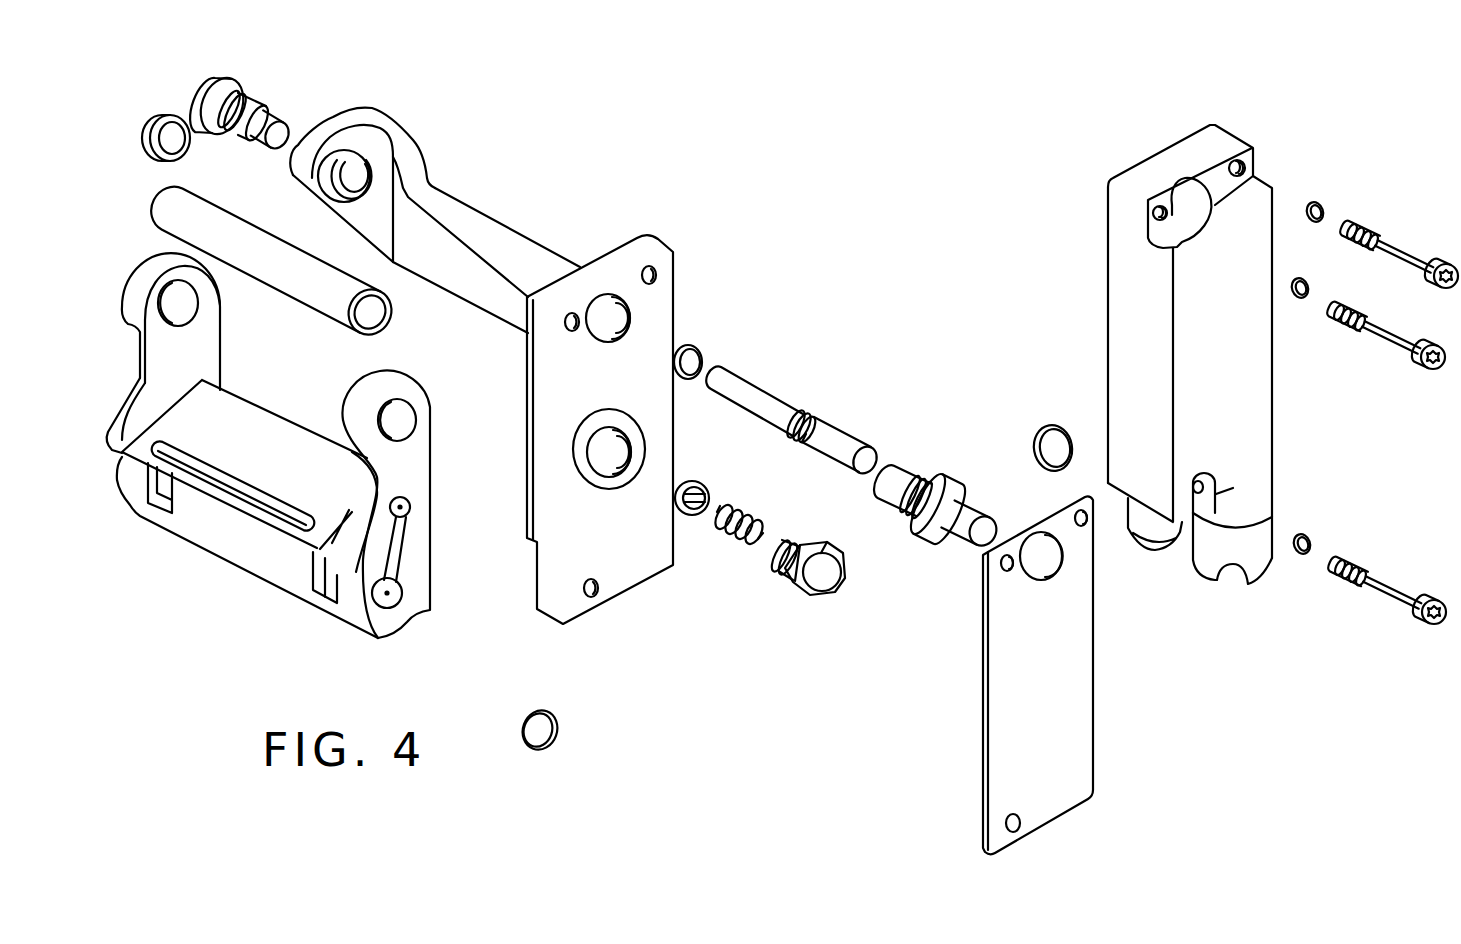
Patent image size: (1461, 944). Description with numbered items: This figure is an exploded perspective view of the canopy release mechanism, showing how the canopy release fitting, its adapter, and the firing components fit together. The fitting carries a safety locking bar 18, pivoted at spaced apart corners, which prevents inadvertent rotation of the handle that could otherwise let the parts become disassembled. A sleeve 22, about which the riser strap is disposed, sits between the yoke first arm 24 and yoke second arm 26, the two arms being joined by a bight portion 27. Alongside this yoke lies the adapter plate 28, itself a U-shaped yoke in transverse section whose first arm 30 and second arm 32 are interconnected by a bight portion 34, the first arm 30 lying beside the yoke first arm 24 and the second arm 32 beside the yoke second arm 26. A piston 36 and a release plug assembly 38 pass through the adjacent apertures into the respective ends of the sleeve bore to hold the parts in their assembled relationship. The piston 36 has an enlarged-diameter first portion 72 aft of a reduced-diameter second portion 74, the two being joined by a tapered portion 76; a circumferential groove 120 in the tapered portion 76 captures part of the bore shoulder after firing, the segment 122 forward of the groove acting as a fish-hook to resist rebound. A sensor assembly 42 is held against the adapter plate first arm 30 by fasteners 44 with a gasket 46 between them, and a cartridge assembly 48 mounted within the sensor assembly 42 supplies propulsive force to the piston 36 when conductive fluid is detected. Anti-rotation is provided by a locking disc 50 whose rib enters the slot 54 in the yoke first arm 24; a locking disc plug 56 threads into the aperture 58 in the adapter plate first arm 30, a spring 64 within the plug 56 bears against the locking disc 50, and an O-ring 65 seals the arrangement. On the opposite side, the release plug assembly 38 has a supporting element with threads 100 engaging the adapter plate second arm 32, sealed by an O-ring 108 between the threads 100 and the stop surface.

The safety locking bar 18 is at (285, 433).
The sleeve 22 is at (260, 238).
The yoke first arm 24 is at (418, 497).
The yoke second arm 26 is at (205, 350).
The bight portion 27 is at (231, 548).
The adapter plate 28 is at (481, 354).
The adapter plate first arm 30 is at (640, 233).
The adapter plate second arm 32 is at (384, 116).
The bight portion 34 is at (525, 243).
The piston 36 is at (811, 422).
The release plug assembly 38 is at (287, 93).
The sensor assembly 42 is at (1271, 429).
The fasteners 44 is at (1412, 255).
The gasket 46 is at (1082, 713).
The cartridge assembly 48 is at (933, 483).
The locking disc 50 is at (708, 485).
The slot 54 is at (397, 552).
The locking disc plug 56 is at (815, 587).
The aperture 58 is at (593, 476).
The spring 64 is at (745, 515).
The O-ring 65 is at (553, 723).
The enlarged-diameter first portion 72 is at (860, 440).
The reduced-diameter second portion 74 is at (725, 368).
The tapered portion 76 is at (803, 443).
The threads 100 is at (266, 103).
The O-ring 108 is at (140, 140).
The circumferential groove 120 is at (805, 420).
The segment 122 is at (803, 417).